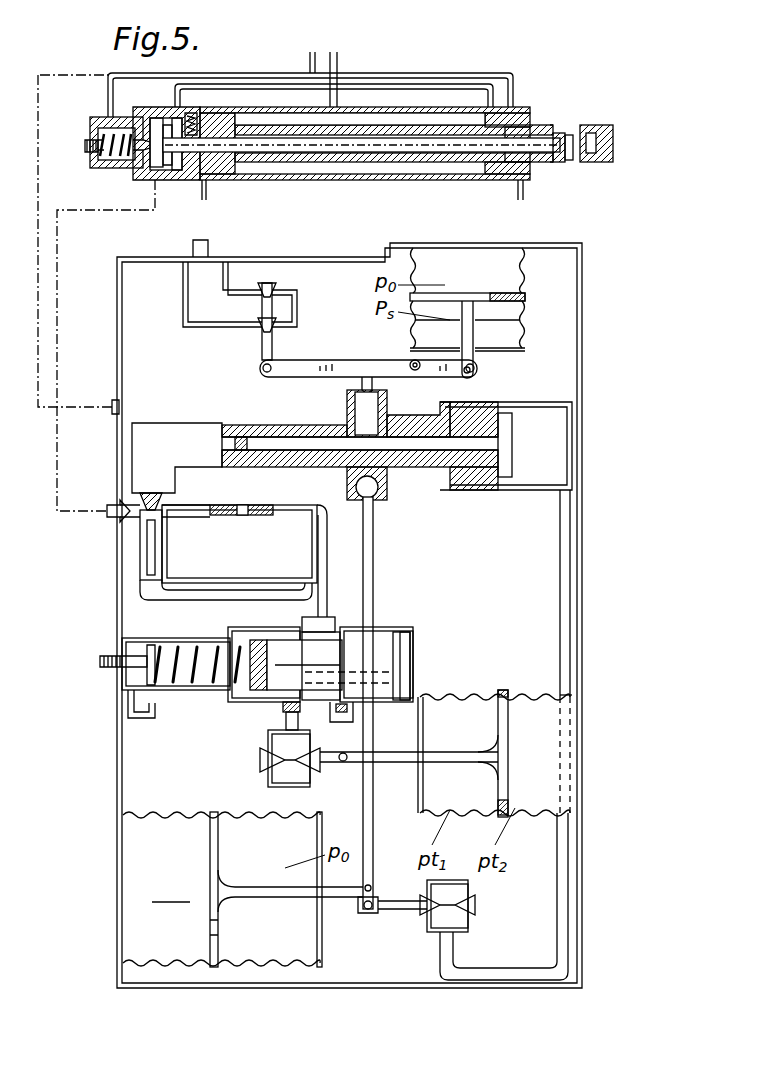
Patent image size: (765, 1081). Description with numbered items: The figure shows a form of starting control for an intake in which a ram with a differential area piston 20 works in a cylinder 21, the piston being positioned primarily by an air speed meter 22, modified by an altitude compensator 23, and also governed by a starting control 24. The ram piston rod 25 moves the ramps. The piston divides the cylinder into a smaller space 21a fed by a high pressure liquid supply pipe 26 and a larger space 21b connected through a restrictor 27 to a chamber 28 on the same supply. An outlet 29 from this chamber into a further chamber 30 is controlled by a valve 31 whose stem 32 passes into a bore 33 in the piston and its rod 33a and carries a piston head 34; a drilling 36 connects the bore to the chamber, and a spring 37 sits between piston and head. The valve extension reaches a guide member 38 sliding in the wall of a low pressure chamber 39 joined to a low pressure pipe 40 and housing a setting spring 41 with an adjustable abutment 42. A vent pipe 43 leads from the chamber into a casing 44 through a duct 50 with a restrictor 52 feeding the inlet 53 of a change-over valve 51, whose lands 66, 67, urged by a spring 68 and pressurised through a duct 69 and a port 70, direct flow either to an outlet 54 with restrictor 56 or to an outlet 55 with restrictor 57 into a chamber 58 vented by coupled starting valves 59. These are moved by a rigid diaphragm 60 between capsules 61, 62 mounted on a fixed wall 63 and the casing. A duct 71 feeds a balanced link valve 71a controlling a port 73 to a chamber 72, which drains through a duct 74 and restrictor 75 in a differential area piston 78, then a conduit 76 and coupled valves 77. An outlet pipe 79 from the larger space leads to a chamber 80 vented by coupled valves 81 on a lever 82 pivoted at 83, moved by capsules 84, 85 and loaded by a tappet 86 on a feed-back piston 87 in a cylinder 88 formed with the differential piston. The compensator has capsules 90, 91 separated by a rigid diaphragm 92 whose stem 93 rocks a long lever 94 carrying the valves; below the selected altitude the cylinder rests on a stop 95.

The differential area piston 20 is at (372, 180).
The cylinder 21 is at (338, 162).
The pressure space 21a is at (440, 120).
The pressure space 21b is at (295, 162).
The air speed meter 22 is at (527, 297).
The altitude compensator 23 is at (336, 941).
The starting control 24 is at (553, 684).
The ram piston rod 25 is at (608, 148).
The high pressure liquid supply pipe 26 is at (337, 55).
The restrictor 27 is at (197, 110).
The chamber 28 is at (168, 124).
The outlet 29 is at (156, 180).
The chamber 30 is at (145, 175).
The valve 31 is at (177, 180).
The stem 32 is at (262, 153).
The bore 33 is at (560, 133).
The rod 33a is at (568, 162).
The piston head 34 is at (553, 128).
The drilling 36 is at (406, 172).
The spring 37 is at (452, 165).
The guide member 38 is at (145, 150).
The low pressure chamber 39 is at (100, 160).
The low pressure pipe 40 is at (140, 73).
The setting spring 41 is at (100, 122).
The adjustable abutment 42 is at (90, 142).
The vent pipe 43 is at (80, 211).
The casing 44 is at (117, 262).
The duct 50 is at (318, 553).
The change-over valve 51 is at (211, 705).
The restrictor 52 is at (240, 515).
The inlet 53 is at (330, 617).
The outlet 54 is at (353, 720).
The outlet 55 is at (283, 707).
The restrictor 56 is at (350, 710).
The restrictor 57 is at (286, 720).
The chamber 58 is at (268, 748).
The coupled vent starting valves 59 is at (262, 765).
The rigid diaphragm 60 is at (487, 798).
The flexible capsule 61 is at (468, 697).
The flexible capsule 62 is at (530, 690).
The fixed wall 63 is at (418, 796).
The land 66 is at (270, 640).
The land 67 is at (403, 650).
The spring 68 is at (172, 690).
The duct 69 is at (380, 660).
The port 70 is at (130, 712).
The duct 71 is at (235, 590).
The balanced link valve 71a is at (147, 548).
The chamber 72 is at (162, 440).
The port 73 is at (162, 500).
The duct 74 is at (410, 452).
The restrictor 75 is at (240, 437).
The conduit 76 is at (560, 562).
The coupled valves 77 is at (468, 898).
The differential area piston 78 is at (318, 468).
The outlet pipe 79 is at (208, 240).
The chamber 80 is at (230, 300).
The coupled valves 81 is at (276, 290).
The lever 82 is at (305, 355).
The pivot 83 is at (411, 362).
The capsule 84 is at (524, 272).
The capsule 85 is at (524, 325).
The tappet 86 is at (364, 380).
The feed-back piston 87 is at (355, 398).
The cylinder 88 is at (387, 410).
The capsule 90 is at (175, 815).
The capsule 91 is at (272, 815).
The rigid diaphragm 92 is at (212, 850).
The stem 93 is at (338, 897).
The long lever 94 is at (373, 845).
The stop 95 is at (300, 425).